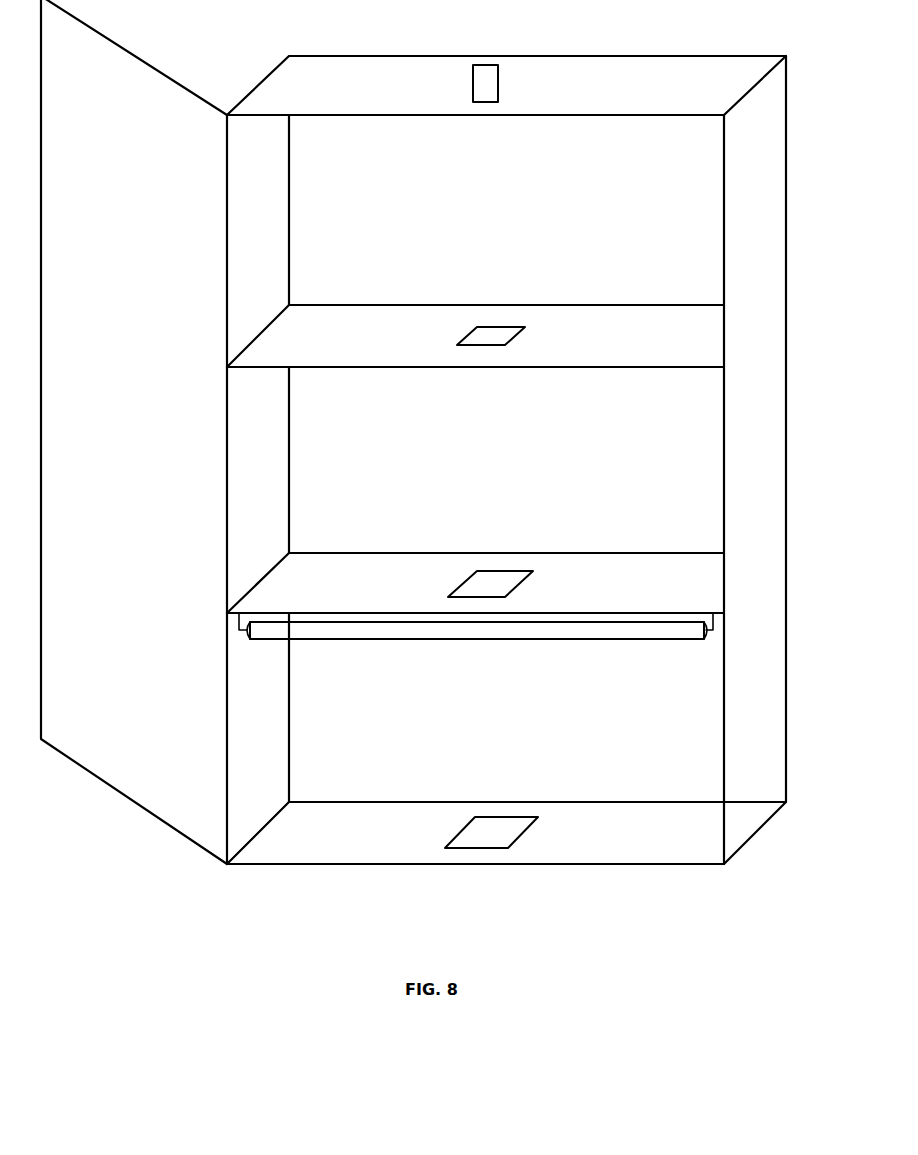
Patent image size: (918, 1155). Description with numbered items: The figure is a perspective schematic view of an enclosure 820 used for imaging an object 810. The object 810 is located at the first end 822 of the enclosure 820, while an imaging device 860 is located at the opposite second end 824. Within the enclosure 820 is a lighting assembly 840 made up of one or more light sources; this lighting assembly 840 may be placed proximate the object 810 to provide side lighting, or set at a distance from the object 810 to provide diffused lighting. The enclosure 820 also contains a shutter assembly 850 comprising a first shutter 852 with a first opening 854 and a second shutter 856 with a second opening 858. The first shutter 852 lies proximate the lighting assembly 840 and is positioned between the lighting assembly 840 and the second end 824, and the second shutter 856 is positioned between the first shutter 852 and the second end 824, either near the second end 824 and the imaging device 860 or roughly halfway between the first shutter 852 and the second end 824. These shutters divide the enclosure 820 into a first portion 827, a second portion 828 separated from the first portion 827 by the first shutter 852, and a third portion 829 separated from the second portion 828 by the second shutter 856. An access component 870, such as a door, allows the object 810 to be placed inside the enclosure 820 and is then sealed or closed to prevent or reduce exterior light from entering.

The object 810 is at (497, 832).
The enclosure 820 is at (690, 56).
The first end 822 is at (336, 854).
The second end 824 is at (586, 70).
The first portion 827 is at (500, 713).
The second portion 828 is at (500, 449).
The third portion 829 is at (495, 200).
The lighting assembly 840 is at (400, 637).
The shutter assembly 850 is at (800, 305).
The first shutter 852 is at (384, 568).
The first opening 854 is at (492, 581).
The second shutter 856 is at (399, 320).
The second opening 858 is at (492, 336).
The imaging device 860 is at (473, 82).
The access component 870 is at (134, 432).